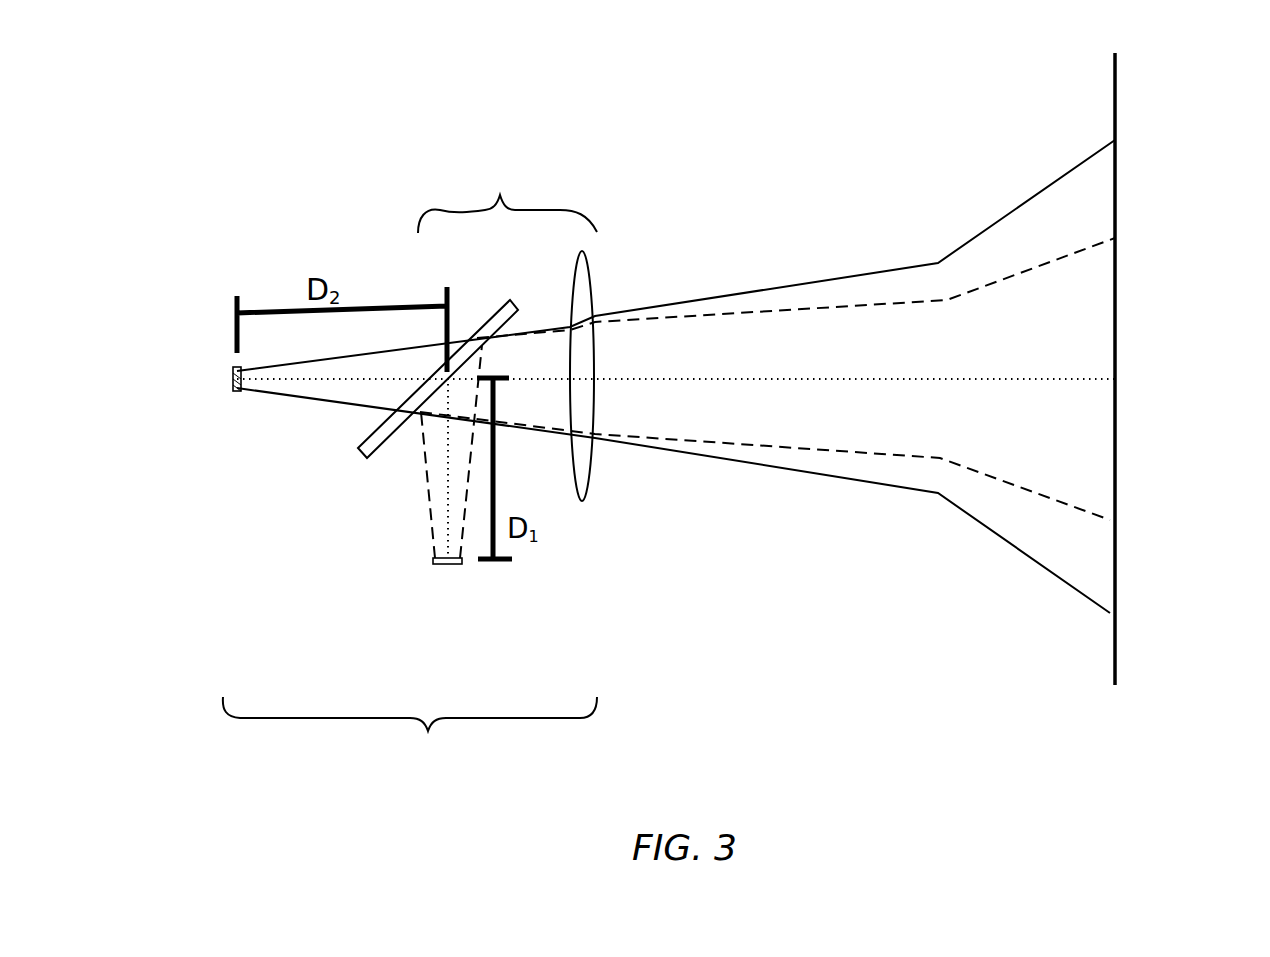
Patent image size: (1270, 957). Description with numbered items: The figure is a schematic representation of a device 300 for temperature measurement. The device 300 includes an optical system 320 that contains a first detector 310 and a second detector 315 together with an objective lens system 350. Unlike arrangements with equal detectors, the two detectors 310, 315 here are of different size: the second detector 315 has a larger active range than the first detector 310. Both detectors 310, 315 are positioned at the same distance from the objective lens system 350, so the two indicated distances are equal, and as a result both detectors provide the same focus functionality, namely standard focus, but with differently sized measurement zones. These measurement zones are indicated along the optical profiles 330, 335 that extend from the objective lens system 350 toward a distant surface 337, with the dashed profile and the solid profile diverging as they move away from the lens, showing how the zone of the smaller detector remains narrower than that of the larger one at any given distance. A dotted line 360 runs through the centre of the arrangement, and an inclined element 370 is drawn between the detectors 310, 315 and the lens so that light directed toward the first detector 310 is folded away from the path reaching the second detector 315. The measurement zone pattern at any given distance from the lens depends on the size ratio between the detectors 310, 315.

The device 300 is at (410, 731).
The first detector 310 is at (448, 565).
The second detector 315 is at (232, 373).
The optical system 320 is at (500, 193).
The optical profile 330 is at (695, 442).
The optical profile 335 is at (810, 477).
The screen 337 is at (1117, 100).
The objective lens system 350 is at (594, 283).
The optical axis 360 is at (1072, 380).
The beam splitter 370 is at (367, 460).